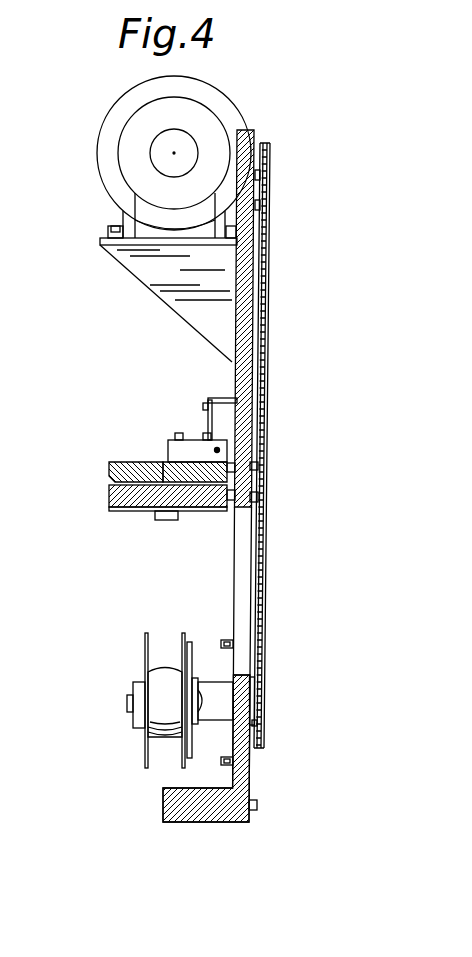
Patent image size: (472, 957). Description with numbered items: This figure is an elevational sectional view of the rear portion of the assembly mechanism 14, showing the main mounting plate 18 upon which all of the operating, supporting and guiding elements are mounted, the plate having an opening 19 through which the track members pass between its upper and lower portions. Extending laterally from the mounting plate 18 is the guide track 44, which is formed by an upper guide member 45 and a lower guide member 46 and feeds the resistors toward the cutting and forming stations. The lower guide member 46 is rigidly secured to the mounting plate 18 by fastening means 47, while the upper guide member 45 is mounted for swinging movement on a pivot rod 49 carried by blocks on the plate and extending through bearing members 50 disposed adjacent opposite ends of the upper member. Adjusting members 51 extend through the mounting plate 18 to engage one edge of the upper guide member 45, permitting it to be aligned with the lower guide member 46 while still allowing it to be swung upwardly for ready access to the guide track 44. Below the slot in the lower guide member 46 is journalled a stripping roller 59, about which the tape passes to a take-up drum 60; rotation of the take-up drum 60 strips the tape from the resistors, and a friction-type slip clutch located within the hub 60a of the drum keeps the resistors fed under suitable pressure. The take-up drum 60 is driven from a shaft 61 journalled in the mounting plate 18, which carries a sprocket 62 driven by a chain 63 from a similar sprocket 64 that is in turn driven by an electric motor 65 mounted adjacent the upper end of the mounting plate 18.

The assembly mechanism 14 is at (303, 306).
The main mounting plate 18 is at (246, 372).
The opening 19 is at (238, 573).
The guide track 44 is at (162, 472).
The upper guide member 45 is at (112, 468).
The lower guide member 46 is at (112, 497).
The fastening means 47 is at (258, 497).
The pivot rod 49 is at (220, 449).
The bearing members 50 is at (192, 450).
The adjusting members 51 is at (258, 467).
The stripping roller 59 is at (163, 520).
The take-up drum 60 is at (140, 672).
The hub 60a is at (170, 730).
The shaft 61 is at (215, 723).
The sprocket 62 is at (256, 688).
The chain 63 is at (270, 248).
The sprocket 64 is at (265, 178).
The electric motor 65 is at (193, 112).